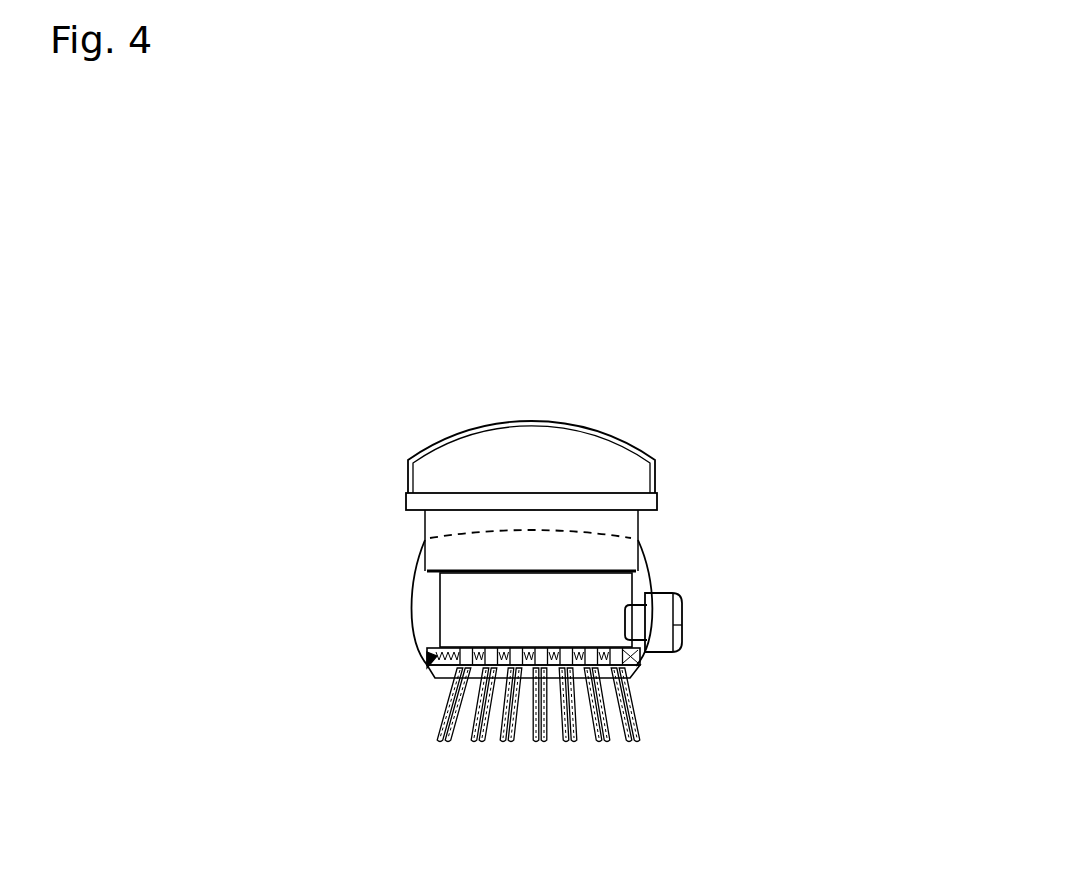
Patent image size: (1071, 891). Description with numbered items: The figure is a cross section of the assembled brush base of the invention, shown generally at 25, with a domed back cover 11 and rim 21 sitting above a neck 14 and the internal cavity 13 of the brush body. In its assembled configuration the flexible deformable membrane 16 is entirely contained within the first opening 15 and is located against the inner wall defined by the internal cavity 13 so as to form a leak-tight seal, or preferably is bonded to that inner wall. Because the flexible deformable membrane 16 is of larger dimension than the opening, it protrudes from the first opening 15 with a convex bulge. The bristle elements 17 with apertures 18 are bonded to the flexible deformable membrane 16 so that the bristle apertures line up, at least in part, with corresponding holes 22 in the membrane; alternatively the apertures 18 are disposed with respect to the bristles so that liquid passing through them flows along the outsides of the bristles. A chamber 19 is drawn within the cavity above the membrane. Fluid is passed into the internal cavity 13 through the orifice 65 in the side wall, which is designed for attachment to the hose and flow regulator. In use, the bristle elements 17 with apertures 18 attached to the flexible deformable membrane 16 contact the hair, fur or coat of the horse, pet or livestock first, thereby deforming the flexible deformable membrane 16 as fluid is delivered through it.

The brush base 25 is at (322, 245).
The cap 11 is at (627, 433).
The rim band 21 is at (655, 495).
The neck 14 is at (425, 540).
The internal cavity 13 is at (638, 593).
The reservoir cavity 19 is at (450, 610).
The orifice 65 is at (687, 612).
The flexible deformable membrane 16 is at (427, 662).
The holes 22 is at (633, 658).
The first opening 15 is at (430, 672).
The bristle elements 17 is at (468, 735).
The apertures 18 is at (540, 743).